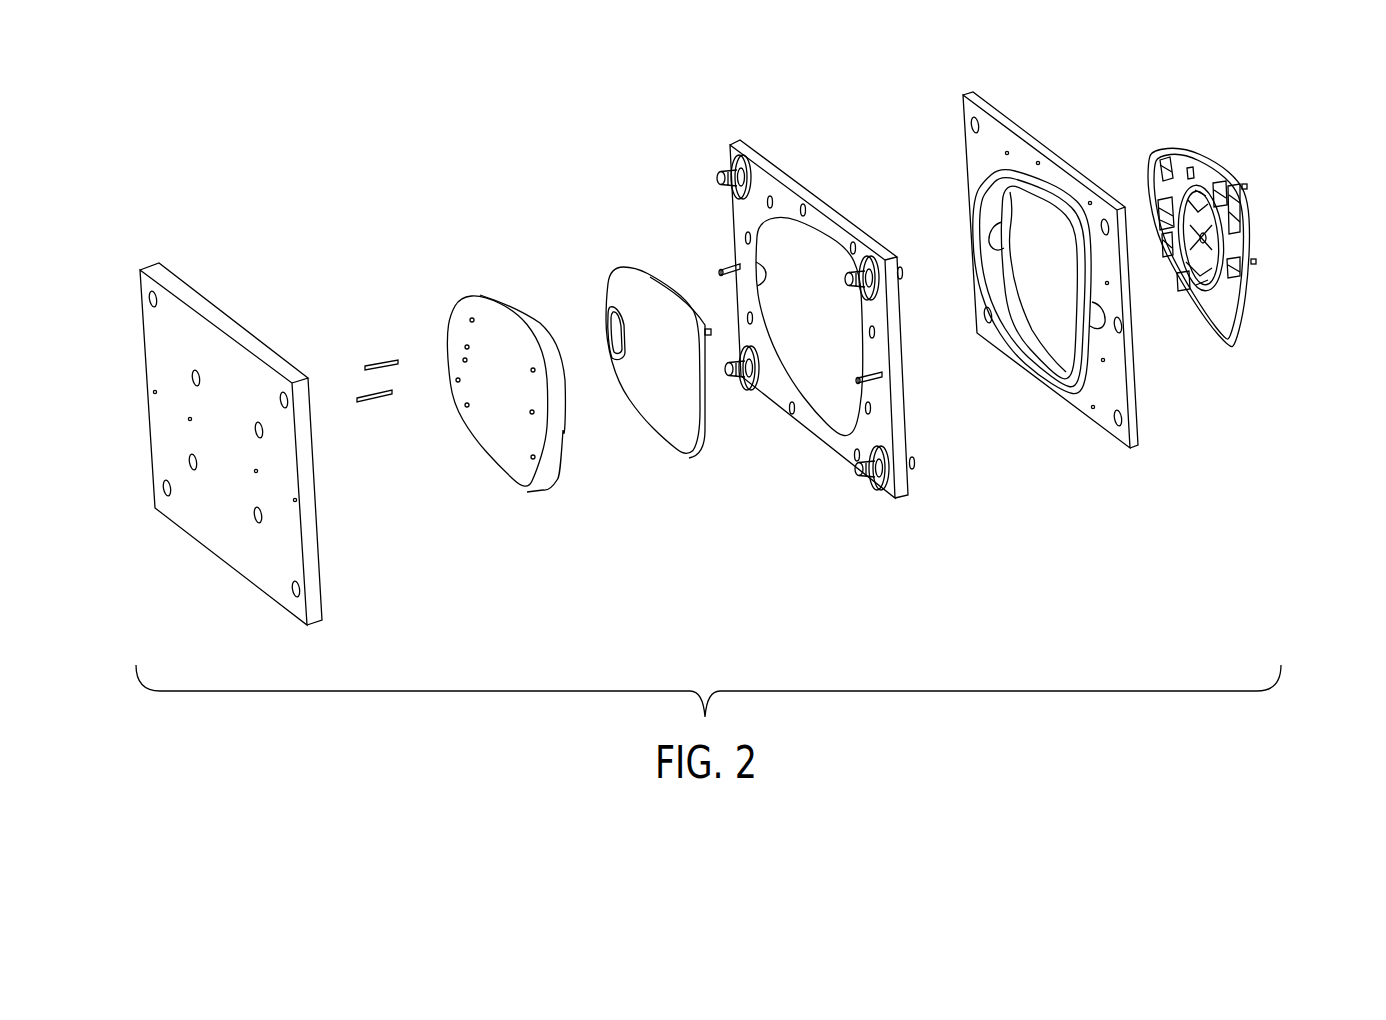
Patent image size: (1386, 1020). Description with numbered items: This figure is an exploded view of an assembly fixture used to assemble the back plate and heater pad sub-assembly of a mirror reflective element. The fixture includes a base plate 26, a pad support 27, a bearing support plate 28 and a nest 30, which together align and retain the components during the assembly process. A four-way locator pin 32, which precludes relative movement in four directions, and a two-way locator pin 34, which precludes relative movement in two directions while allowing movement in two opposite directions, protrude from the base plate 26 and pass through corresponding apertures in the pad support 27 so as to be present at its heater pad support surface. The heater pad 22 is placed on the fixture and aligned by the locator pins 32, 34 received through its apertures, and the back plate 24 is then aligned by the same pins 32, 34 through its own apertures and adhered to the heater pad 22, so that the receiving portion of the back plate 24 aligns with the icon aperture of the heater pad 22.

The heater pad 22 is at (613, 250).
The back plate 24 is at (1259, 324).
The base plate 26 is at (175, 257).
The pad support 27 is at (479, 284).
The bearing support plate 28 is at (918, 509).
The nest 30 is at (1149, 450).
The 4-way locator pin 32 is at (425, 448).
The 2-way locator pin 34 is at (386, 414).